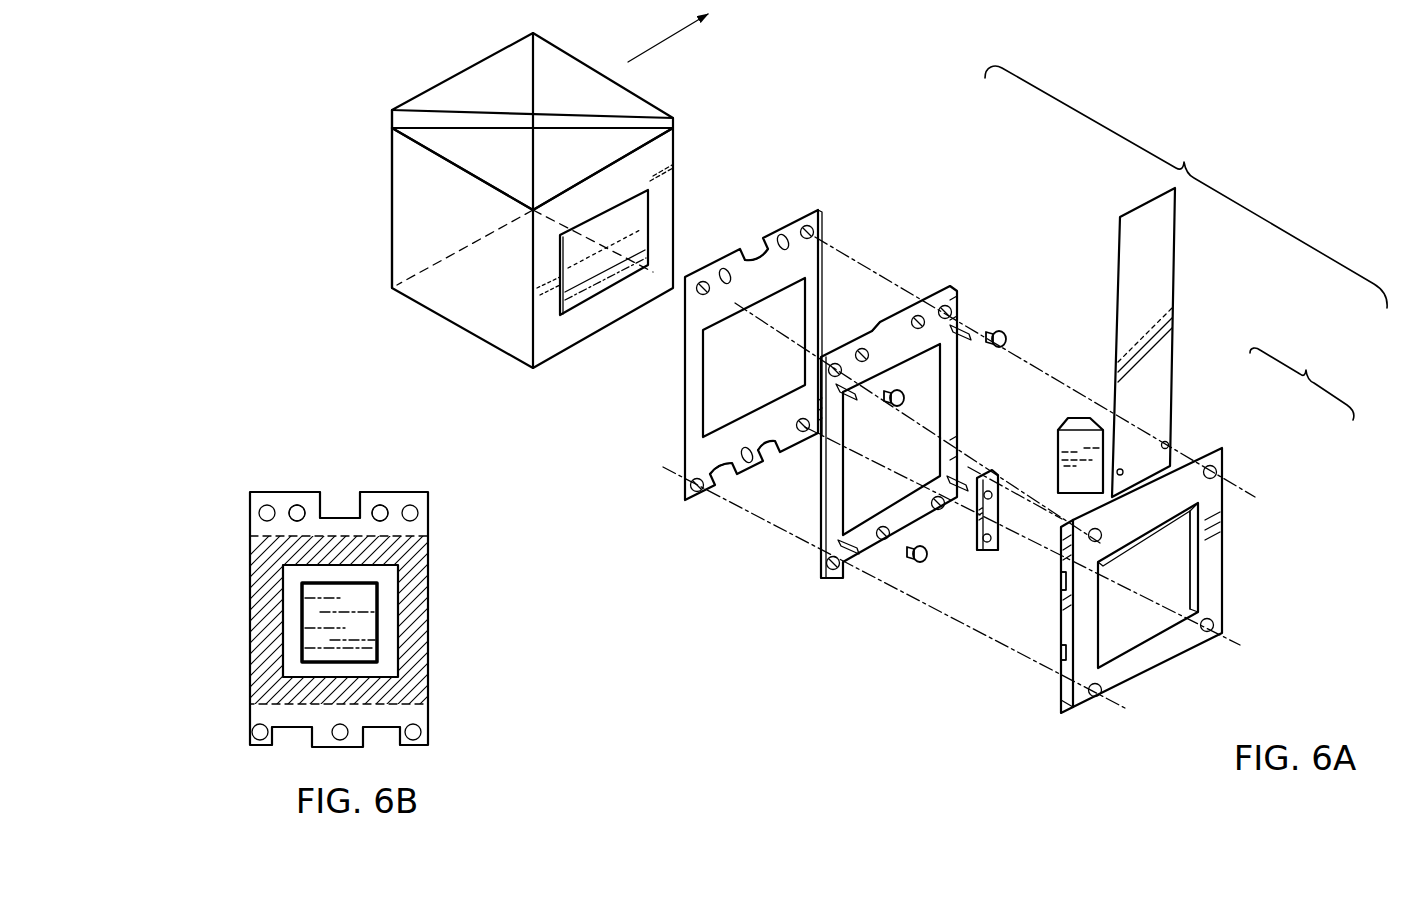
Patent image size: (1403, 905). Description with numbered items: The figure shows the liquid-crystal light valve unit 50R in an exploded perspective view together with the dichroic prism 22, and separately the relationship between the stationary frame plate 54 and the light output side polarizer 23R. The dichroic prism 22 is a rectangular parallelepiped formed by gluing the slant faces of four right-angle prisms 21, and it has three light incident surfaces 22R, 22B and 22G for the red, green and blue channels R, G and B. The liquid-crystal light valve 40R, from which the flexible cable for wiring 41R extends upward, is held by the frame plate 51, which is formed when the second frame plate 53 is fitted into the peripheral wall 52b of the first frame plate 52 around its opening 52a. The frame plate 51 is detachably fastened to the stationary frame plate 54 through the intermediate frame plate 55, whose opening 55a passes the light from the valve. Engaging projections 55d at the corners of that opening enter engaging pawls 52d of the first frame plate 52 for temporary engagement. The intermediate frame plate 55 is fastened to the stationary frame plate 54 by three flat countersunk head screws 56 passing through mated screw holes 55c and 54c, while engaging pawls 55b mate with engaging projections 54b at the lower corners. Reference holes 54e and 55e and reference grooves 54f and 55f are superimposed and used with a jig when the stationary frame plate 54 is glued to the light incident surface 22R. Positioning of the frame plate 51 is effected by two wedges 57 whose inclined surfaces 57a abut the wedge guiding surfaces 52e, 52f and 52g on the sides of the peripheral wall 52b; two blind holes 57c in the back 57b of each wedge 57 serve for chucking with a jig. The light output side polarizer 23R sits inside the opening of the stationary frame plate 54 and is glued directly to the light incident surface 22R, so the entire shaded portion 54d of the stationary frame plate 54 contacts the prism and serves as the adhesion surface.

In FIG. 6A, the right-angle prism 21 is at (478, 93).
In FIG. 6A, the dichroic prism 22 is at (395, 302).
In FIG. 6A, the light incident surface 22B is at (385, 175).
In FIG. 6A, the light incident surface 22G is at (405, 237).
In FIG. 6A, the light incident surface 22R is at (665, 162).
In FIG. 6B, the light incident surface 22R is at (392, 581).
In FIG. 6A, the light output side polarizer 23R is at (572, 297).
In FIG. 6B, the light output side polarizer 23R is at (357, 615).
In FIG. 6A, the blue light B is at (406, 82).
In FIG. 6A, the green light G is at (481, 301).
In FIG. 6A, the red light R is at (584, 261).
In FIG. 6A, the stationary frame plate 54 is at (824, 194).
In FIG. 6B, the stationary frame plate 54 is at (248, 510).
In FIG. 6A, the engaging projections 54b is at (689, 486).
In FIG. 6A, the screw holes 54c is at (792, 253).
In FIG. 6B, the adhesion portion 54d is at (417, 657).
In FIG. 6A, the reference holes 54e is at (724, 268).
In FIG. 6B, the reference holes 54e is at (382, 506).
In FIG. 6A, the reference grooves 54f is at (775, 442).
In FIG. 6B, the reference grooves 54f is at (293, 735).
In FIG. 6A, the intermediate frame plate 55 is at (972, 280).
In FIG. 6B, the intermediate frame plate 55 is at (345, 528).
In FIG. 6A, the opening 55a is at (708, 366).
In FIG. 6A, the engaging pawls 55b is at (937, 490).
In FIG. 6A, the screw holes 55c is at (957, 310).
In FIG. 6A, the engaging projections 55d is at (838, 390).
In FIG. 6A, the reference holes 55e is at (887, 323).
In FIG. 6B, the reference holes 55e is at (338, 513).
In FIG. 6A, the reference grooves 55f is at (922, 508).
In FIG. 6B, the reference grooves 55f is at (336, 736).
In FIG. 6A, the flat countersunk head screws 56 is at (1007, 338).
In FIG. 6A, the wedge 57 is at (1085, 408).
In FIG. 6A, the inclined surface 57a is at (1060, 452).
In FIG. 6A, the back 57b is at (997, 550).
In FIG. 6A, the blind holes 57c is at (968, 585).
In FIG. 6A, the liquid-crystal light valve unit 50R is at (1186, 187).
In FIG. 6A, the flexible cable for wiring 41R is at (1153, 298).
In FIG. 6A, the frame plate 51 is at (1302, 381).
In FIG. 6A, the first frame plate 52 is at (1232, 459).
In FIG. 6A, the opening 52a is at (1182, 575).
In FIG. 6A, the peripheral wall 52b is at (1069, 699).
In FIG. 6A, the engaging pawls 52d is at (1218, 472).
In FIG. 6A, the wedge guiding surface 52e is at (1067, 633).
In FIG. 6A, the wedge guiding surface 52f is at (1072, 583).
In FIG. 6A, the wedge guiding surface 52g is at (1061, 655).
In FIG. 6A, the second frame plate 53 is at (1176, 437).
In FIG. 6A, the liquid-crystal light valve 40R is at (1130, 617).